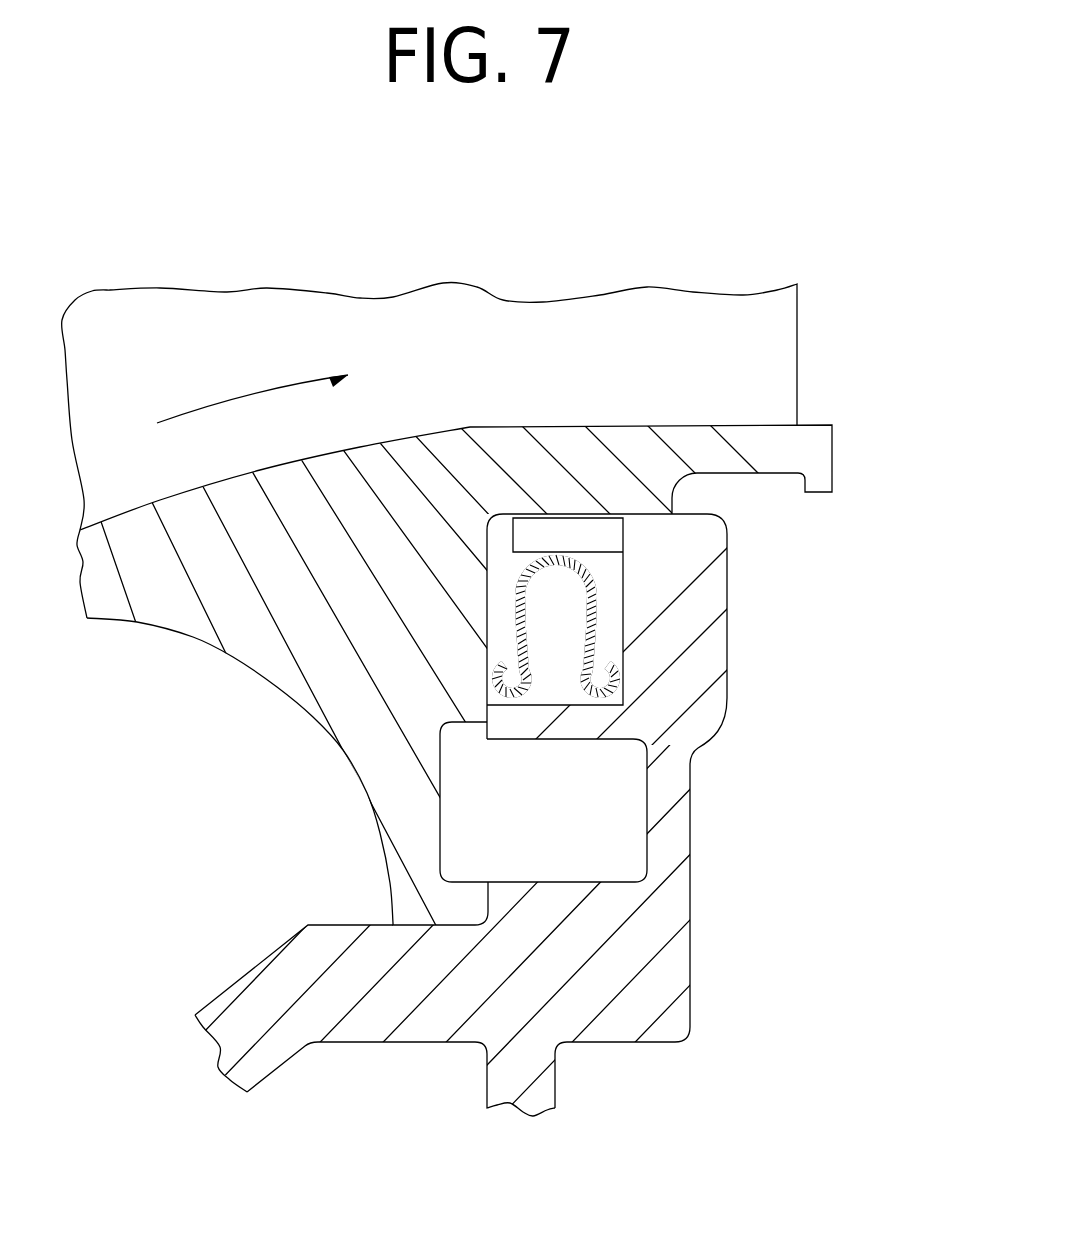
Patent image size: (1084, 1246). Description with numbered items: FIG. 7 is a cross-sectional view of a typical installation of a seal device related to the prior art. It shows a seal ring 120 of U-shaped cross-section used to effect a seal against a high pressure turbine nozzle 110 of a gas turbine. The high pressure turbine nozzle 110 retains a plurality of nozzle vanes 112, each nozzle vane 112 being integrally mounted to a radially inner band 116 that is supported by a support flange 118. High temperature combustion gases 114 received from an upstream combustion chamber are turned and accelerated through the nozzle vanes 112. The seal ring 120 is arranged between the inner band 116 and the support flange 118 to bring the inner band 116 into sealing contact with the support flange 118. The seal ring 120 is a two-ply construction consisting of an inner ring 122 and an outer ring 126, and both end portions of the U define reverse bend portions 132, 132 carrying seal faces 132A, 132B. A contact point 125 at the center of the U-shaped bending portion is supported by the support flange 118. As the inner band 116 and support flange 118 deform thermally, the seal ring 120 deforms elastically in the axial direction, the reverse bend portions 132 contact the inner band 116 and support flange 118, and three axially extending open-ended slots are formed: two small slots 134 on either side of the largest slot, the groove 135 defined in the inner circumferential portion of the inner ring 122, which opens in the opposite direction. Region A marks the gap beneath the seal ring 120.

The high pressure turbine nozzle 110 is at (830, 373).
The nozzle vane 112 is at (492, 357).
The high temperature combustion gases 114 is at (248, 395).
The radially inner band 116 is at (280, 561).
The support flange 118 is at (608, 984).
The seal ring 120 is at (612, 617).
The inner ring 122 is at (573, 642).
The contact point 125 is at (555, 552).
The outer ring 126 is at (486, 560).
The reverse bend portion 132 is at (618, 668).
The seal face 132A is at (490, 700).
The seal face 132B is at (613, 700).
The slot 134 is at (514, 665).
The groove 135 is at (555, 677).
The gap A is at (485, 723).